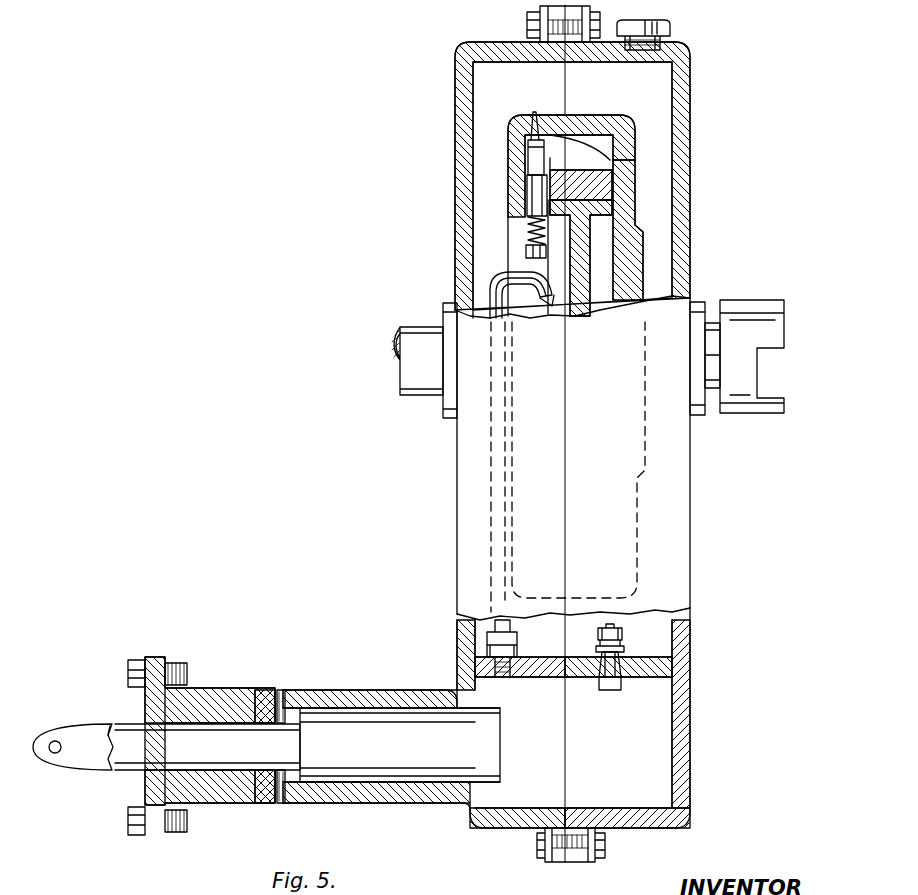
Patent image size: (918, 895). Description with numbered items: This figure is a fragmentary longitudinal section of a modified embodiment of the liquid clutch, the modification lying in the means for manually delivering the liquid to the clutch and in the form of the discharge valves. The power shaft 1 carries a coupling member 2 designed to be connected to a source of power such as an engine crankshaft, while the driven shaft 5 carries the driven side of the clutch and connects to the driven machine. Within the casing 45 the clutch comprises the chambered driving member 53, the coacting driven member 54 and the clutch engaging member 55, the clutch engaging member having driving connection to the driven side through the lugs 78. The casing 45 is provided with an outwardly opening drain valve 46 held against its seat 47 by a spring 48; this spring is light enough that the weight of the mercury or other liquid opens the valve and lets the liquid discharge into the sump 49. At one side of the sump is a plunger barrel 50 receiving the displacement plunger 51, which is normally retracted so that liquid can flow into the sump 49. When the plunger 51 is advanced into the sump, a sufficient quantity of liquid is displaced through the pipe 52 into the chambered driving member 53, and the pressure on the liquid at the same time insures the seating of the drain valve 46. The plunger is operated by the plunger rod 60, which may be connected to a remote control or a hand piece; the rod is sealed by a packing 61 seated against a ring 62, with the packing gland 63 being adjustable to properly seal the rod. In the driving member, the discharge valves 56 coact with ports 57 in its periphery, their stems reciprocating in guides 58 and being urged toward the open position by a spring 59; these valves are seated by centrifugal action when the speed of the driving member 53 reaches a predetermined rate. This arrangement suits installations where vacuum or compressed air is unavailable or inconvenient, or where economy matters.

The power shaft 1 is at (712, 330).
The coupling member 2 is at (764, 300).
The driven shaft 5 is at (398, 371).
The casing 45 is at (676, 517).
The drain valve 46 is at (610, 692).
The seat 47 is at (620, 668).
The spring 48 is at (628, 657).
The sump 49 is at (652, 763).
The plunger barrel 50 is at (435, 792).
The displacement plunger 51 is at (380, 717).
The pipe 52 is at (506, 491).
The chambered driving member 53 is at (632, 182).
The driven member 54 is at (591, 296).
The clutch engaging member 55 is at (631, 152).
The discharge valves 56 is at (529, 143).
The ports 57 is at (528, 125).
The guides 58 is at (534, 195).
The spring 59 is at (528, 233).
The plunger rod 60 is at (126, 726).
The packing 61 is at (263, 712).
The ring 62 is at (284, 700).
The packing gland 63 is at (202, 708).
The lugs 78 is at (561, 150).